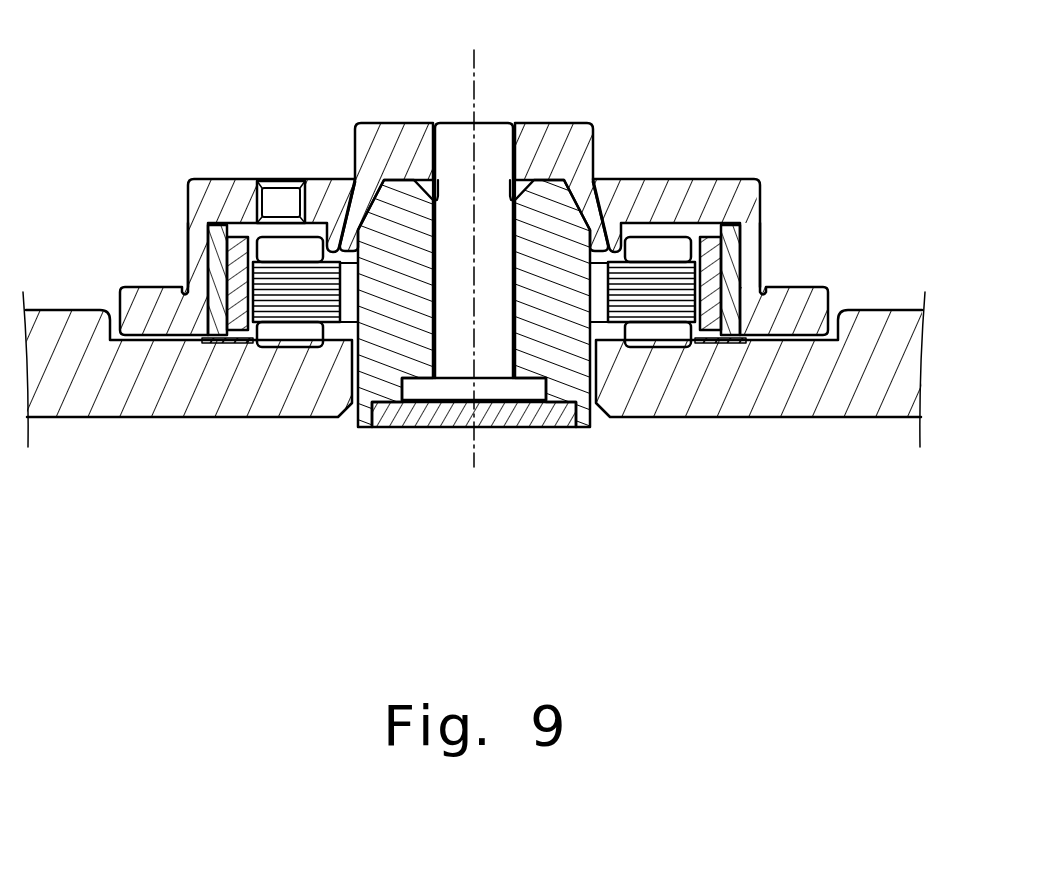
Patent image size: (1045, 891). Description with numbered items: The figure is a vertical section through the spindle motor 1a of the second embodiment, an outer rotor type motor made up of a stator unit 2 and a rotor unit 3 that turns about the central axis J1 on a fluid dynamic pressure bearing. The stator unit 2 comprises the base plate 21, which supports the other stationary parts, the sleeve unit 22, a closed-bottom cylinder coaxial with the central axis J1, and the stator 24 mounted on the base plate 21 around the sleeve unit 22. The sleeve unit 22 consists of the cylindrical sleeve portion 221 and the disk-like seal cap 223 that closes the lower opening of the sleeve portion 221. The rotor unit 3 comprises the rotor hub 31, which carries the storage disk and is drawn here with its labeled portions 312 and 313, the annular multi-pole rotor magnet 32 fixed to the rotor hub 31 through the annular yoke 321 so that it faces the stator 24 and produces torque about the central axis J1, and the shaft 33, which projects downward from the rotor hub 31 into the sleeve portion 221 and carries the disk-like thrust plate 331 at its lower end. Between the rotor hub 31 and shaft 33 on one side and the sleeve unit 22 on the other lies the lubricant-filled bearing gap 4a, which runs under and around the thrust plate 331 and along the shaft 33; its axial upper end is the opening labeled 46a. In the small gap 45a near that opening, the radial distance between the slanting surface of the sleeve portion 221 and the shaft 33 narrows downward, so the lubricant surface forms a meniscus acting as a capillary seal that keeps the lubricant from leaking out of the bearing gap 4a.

The spindle motor 1a is at (148, 94).
The stator unit 2 is at (222, 525).
The base plate 21 is at (125, 388).
The sleeve unit 22 is at (367, 525).
The sleeve portion 221 is at (402, 338).
The seal cap 223 is at (450, 413).
The stator 24 is at (278, 338).
The rotor unit 3 is at (837, 108).
The rotor hub 31 is at (750, 122).
The top plate portion 312 is at (700, 193).
The cylindrical portion 313 is at (747, 258).
The rotor magnet 32 is at (712, 302).
The annular yoke 321 is at (728, 278).
The shaft 33 is at (492, 170).
The thrust plate 331 is at (535, 390).
The bearing gap 4a is at (342, 72).
The small gap 45a is at (332, 248).
The stepped portion 46a is at (433, 192).
The central axis J1 is at (473, 77).